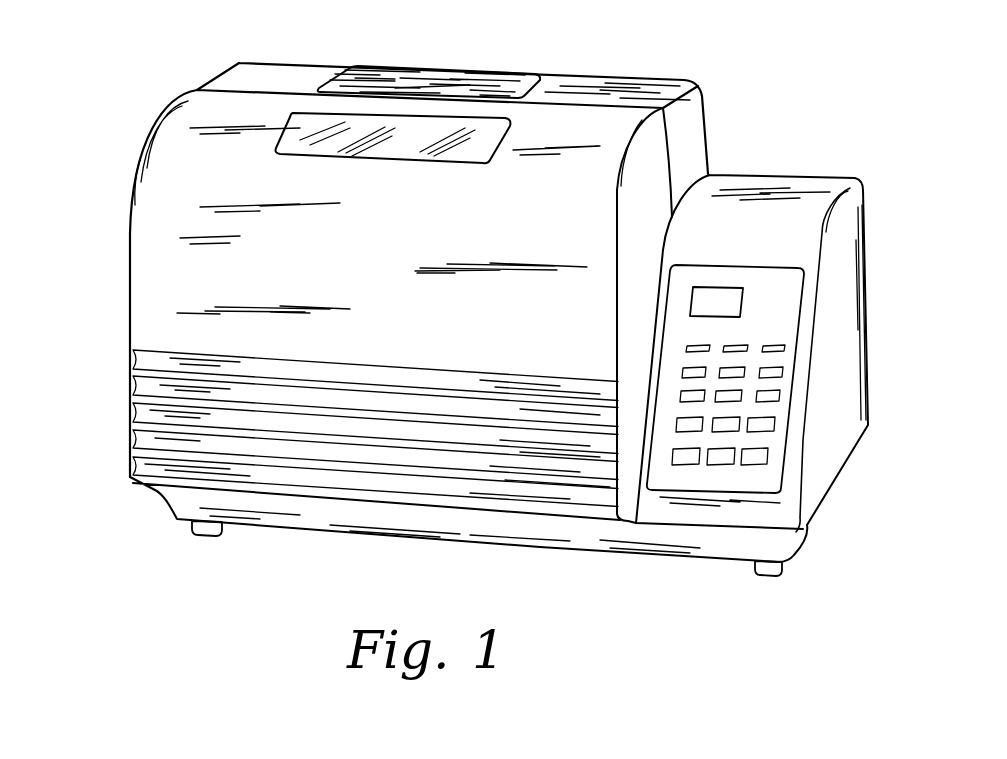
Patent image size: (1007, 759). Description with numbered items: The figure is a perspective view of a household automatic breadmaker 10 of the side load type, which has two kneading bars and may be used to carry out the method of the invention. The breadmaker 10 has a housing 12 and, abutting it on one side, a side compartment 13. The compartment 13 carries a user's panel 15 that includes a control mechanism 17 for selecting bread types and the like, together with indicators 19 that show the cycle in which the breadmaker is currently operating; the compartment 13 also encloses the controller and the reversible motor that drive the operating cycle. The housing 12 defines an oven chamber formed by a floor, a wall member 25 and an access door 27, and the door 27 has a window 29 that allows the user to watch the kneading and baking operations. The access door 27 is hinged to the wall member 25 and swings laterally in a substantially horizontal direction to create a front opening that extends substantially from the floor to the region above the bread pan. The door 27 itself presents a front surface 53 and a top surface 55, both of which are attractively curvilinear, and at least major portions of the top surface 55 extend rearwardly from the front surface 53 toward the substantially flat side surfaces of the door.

The household automatic breadmaker 10 is at (292, 556).
The housing 12 is at (720, 83).
The side compartment 13 is at (814, 163).
The user's panel 15 is at (752, 302).
The control mechanism 17 is at (727, 383).
The indicators 19 is at (760, 428).
The wall member 25 is at (600, 72).
The access door 27 is at (147, 268).
The window 29 is at (335, 140).
The front surface 53 is at (148, 332).
The top surface 55 is at (167, 133).